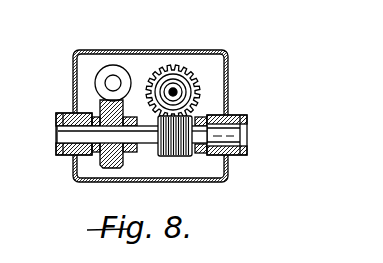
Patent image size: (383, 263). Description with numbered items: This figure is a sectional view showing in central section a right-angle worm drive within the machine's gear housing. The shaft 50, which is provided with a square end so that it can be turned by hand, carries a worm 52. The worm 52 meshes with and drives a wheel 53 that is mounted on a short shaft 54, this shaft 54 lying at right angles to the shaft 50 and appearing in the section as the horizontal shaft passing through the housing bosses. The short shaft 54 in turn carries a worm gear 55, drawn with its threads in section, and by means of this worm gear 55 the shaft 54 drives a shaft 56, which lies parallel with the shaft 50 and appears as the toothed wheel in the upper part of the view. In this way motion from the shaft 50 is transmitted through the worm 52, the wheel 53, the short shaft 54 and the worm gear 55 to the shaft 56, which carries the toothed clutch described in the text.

The shaft 50 is at (114, 80).
The worm 52 is at (96, 78).
The wheel 53 is at (110, 168).
The shaft 54 is at (132, 138).
The worm gear 55 is at (183, 152).
The shaft 56 is at (180, 90).